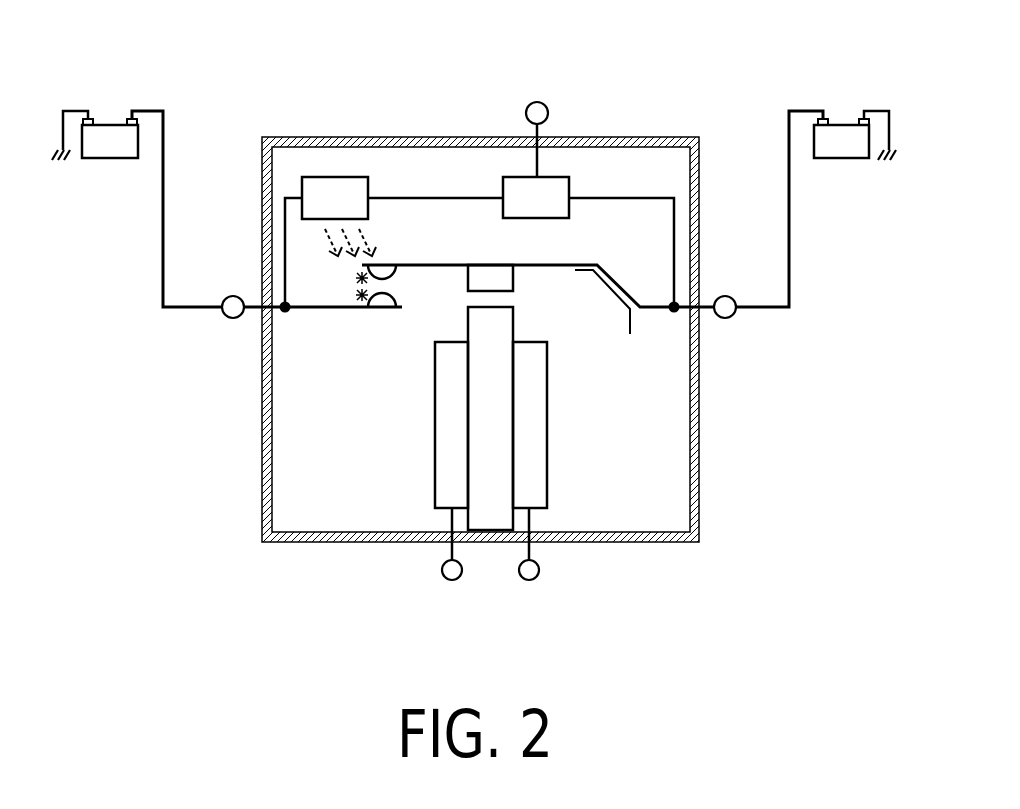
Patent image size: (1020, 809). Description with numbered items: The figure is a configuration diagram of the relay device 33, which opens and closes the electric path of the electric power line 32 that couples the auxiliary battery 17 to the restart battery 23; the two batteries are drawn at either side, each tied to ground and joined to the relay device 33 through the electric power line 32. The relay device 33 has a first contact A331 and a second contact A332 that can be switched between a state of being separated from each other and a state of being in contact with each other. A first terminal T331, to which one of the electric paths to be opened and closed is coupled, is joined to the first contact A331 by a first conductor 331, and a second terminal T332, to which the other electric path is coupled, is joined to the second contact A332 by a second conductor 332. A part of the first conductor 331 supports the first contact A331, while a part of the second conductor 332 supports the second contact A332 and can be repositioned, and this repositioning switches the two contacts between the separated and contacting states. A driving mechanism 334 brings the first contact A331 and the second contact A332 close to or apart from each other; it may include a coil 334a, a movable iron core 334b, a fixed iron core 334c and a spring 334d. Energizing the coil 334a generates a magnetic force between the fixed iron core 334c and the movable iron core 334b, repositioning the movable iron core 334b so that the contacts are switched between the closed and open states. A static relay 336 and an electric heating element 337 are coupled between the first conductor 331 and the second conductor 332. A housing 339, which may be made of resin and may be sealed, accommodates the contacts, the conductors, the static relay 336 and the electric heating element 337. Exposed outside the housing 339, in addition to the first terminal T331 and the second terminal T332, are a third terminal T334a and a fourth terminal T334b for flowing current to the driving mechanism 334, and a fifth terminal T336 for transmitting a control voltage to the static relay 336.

The auxiliary battery 17 is at (108, 123).
The restart battery 23 is at (842, 123).
The electric power line 32 is at (164, 262).
The relay device 33 is at (651, 74).
The housing 339 is at (692, 135).
The first conductor 331 is at (653, 310).
The second conductor 332 is at (325, 310).
The first contact A331 is at (383, 270).
The second contact A332 is at (383, 300).
The driving mechanism 334 is at (501, 391).
The coil 334a is at (540, 467).
The movable iron core 334b is at (500, 273).
The fixed iron core 334c is at (507, 332).
The spring 334d is at (607, 287).
The static relay 336 is at (569, 177).
The electric heating element 337 is at (368, 177).
The first terminal T331 is at (727, 322).
The second terminal T332 is at (232, 322).
The fifth terminal T336 is at (540, 98).
The third terminal T334a is at (450, 582).
The fourth terminal T334b is at (530, 582).